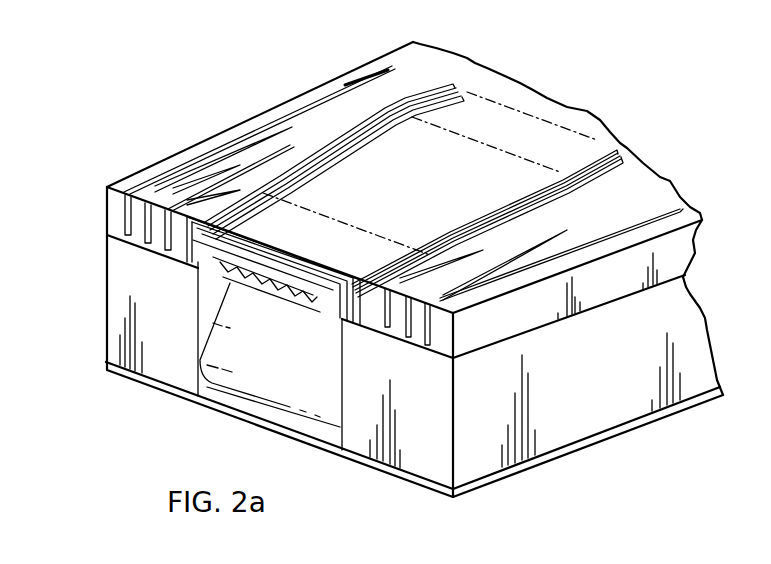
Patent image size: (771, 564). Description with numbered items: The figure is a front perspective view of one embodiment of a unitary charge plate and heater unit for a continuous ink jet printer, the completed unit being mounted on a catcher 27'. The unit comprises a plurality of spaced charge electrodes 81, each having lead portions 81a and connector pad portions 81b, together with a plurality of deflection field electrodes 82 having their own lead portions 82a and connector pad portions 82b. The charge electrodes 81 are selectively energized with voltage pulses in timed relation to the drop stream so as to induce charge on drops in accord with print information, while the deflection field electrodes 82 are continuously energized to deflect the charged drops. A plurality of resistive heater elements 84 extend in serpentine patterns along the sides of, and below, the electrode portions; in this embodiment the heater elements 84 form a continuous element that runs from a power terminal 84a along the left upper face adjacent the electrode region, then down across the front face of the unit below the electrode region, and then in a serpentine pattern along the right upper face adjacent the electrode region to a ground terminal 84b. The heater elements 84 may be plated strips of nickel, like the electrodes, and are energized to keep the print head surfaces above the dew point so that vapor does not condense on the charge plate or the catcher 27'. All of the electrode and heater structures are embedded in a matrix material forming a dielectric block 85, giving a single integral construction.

The catcher 27' is at (380, 269).
The charge electrodes 81 is at (337, 272).
The lead portions 81a is at (377, 117).
The connector pad portions 81b is at (410, 100).
The deflection field electrodes 82 is at (337, 300).
The lead portions 82a is at (310, 148).
The connector pad portions 82b is at (405, 92).
The resistive heater elements 84 is at (153, 232).
The power terminal 84a is at (358, 66).
The ground terminal 84b is at (683, 207).
The dielectric block 85 is at (683, 277).